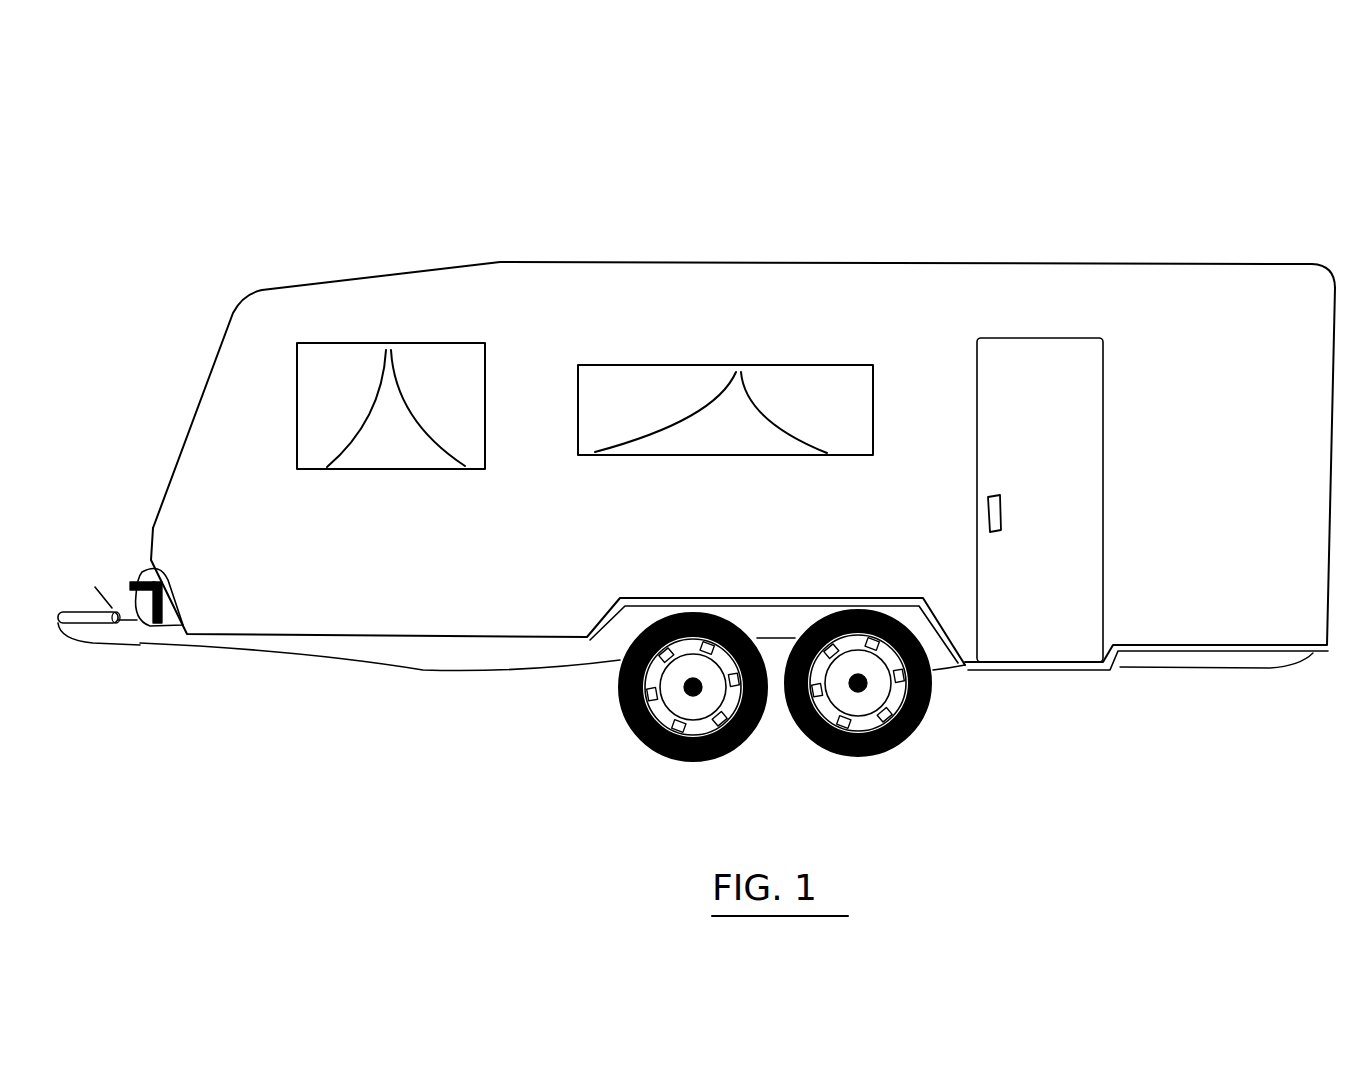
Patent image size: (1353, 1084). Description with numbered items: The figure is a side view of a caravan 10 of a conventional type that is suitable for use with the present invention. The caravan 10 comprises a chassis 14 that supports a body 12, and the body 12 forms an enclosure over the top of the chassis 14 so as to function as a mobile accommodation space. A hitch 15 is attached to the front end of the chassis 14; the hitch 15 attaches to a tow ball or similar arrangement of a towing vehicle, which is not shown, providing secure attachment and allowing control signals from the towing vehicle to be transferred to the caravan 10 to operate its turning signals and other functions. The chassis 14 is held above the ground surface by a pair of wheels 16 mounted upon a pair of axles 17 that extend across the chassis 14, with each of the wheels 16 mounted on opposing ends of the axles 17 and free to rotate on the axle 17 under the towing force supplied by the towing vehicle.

The caravan 10 is at (1238, 192).
The body 12 is at (582, 262).
The chassis 14 is at (490, 653).
The hitch 15 is at (150, 633).
The wheels 16 is at (653, 743).
The axles 17 is at (696, 693).